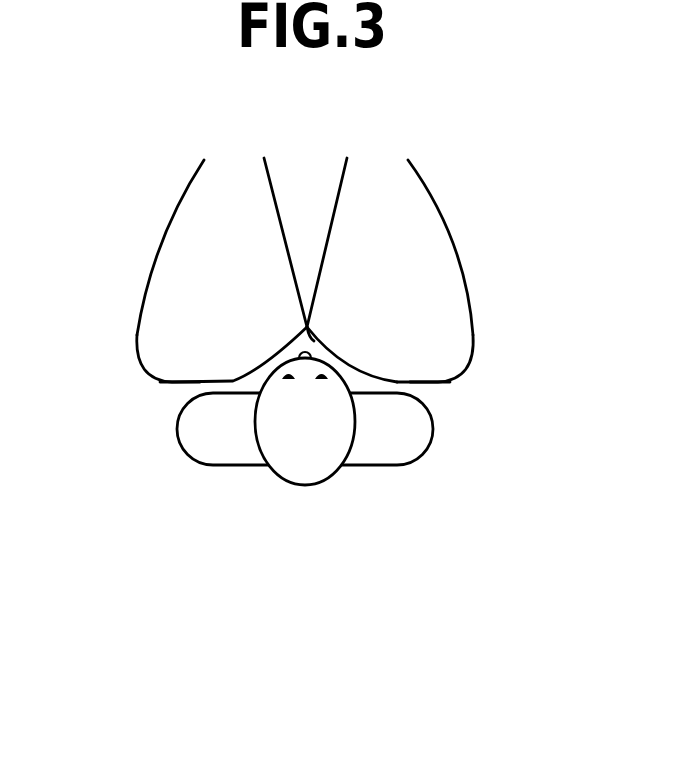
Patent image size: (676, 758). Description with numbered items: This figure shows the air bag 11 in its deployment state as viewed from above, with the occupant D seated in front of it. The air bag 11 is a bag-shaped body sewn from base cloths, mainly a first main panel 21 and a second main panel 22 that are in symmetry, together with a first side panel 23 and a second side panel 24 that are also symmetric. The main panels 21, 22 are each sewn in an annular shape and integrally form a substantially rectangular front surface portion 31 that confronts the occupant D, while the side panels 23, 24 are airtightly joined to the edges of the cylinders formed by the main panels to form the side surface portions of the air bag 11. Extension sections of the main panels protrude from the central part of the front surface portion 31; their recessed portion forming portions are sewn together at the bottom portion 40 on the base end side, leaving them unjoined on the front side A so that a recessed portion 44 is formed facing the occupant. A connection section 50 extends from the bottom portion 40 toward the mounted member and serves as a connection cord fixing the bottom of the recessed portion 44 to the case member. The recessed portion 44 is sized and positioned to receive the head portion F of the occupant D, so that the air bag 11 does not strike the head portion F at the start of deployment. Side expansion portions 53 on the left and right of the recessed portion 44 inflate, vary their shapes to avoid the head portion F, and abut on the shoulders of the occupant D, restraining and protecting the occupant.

The air bag 11 is at (321, 298).
The first main panel 21 is at (175, 268).
The second main panel 22 is at (442, 287).
The first side panel 23 is at (170, 210).
The second side panel 24 is at (453, 240).
The front surface portion 31 is at (177, 383).
The bottom portion 40 is at (316, 339).
The recessed portion 44 is at (335, 362).
The connection section 50 is at (335, 218).
The side expansion portions 53 is at (158, 380).
The front side A is at (305, 212).
The head portion F is at (285, 353).
The occupant D is at (345, 475).